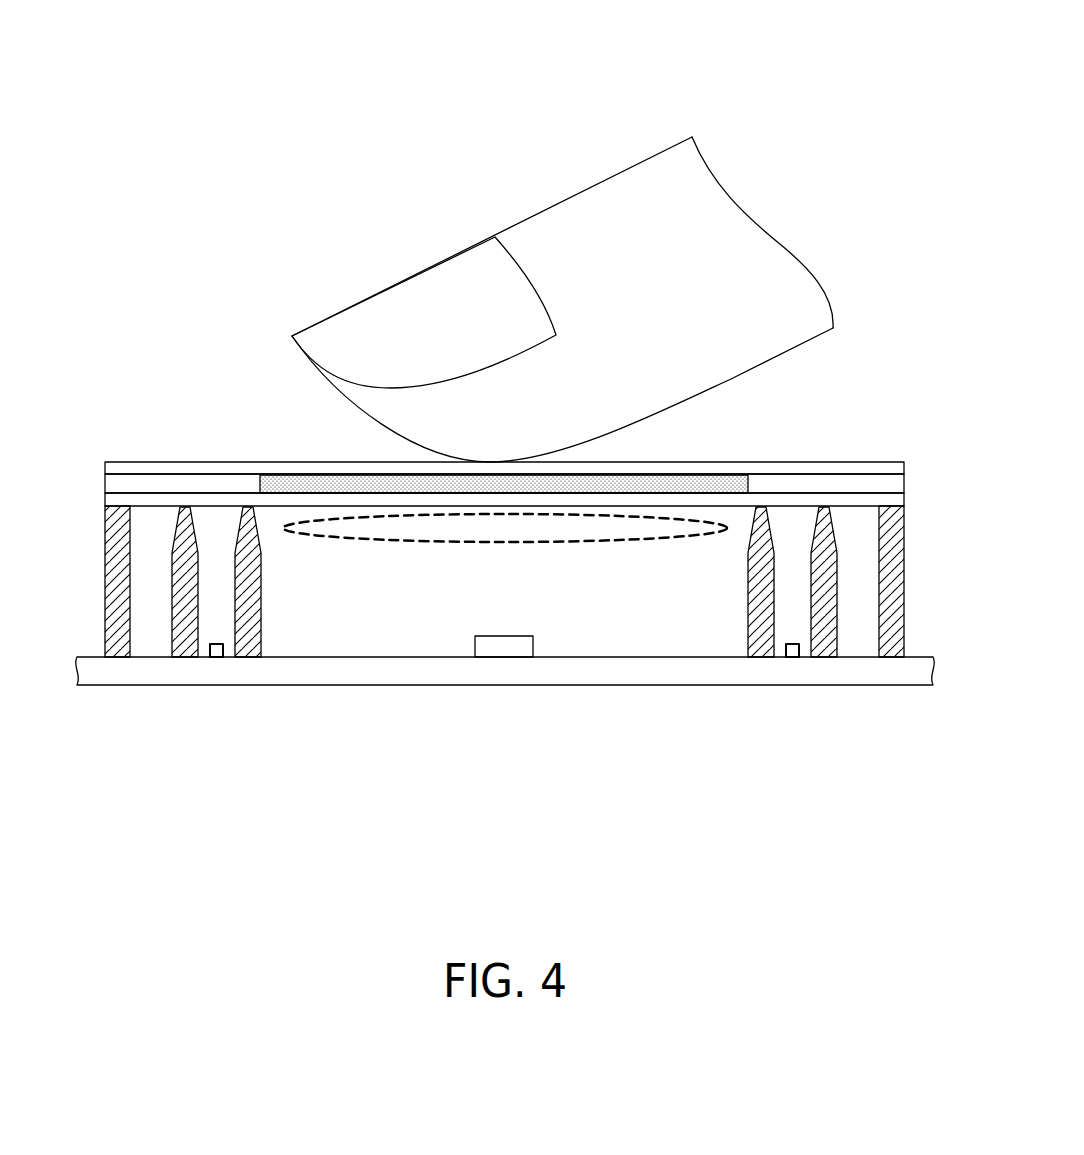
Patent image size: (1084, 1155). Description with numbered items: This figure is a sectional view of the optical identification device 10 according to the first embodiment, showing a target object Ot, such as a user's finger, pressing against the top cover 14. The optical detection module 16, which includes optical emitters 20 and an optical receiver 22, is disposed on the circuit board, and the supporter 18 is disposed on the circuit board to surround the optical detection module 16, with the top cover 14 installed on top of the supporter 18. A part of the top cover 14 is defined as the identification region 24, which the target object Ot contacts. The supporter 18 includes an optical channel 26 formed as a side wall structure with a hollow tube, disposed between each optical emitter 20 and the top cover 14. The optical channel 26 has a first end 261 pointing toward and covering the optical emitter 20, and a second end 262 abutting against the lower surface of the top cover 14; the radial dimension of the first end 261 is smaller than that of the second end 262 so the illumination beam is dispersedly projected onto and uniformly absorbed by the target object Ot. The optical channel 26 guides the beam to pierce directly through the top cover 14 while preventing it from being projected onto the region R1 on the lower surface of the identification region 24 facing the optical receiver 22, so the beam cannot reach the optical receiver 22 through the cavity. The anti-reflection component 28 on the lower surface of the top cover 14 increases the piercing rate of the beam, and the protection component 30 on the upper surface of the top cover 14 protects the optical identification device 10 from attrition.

The optical identification device 10 is at (312, 78).
The target object Ot is at (735, 260).
The protection component 30 is at (880, 467).
The top cover 14 is at (890, 484).
The identification region 24 is at (581, 490).
The anti-reflection component 28 is at (863, 506).
The supporter 18 is at (504, 528).
The optical channel 26 is at (220, 524).
The second end 262 is at (139, 530).
The first end 261 is at (139, 651).
The region R1 is at (375, 543).
The optical detection module 16 is at (505, 713).
The optical emitter 20 is at (216, 659).
The optical receiver 22 is at (508, 658).